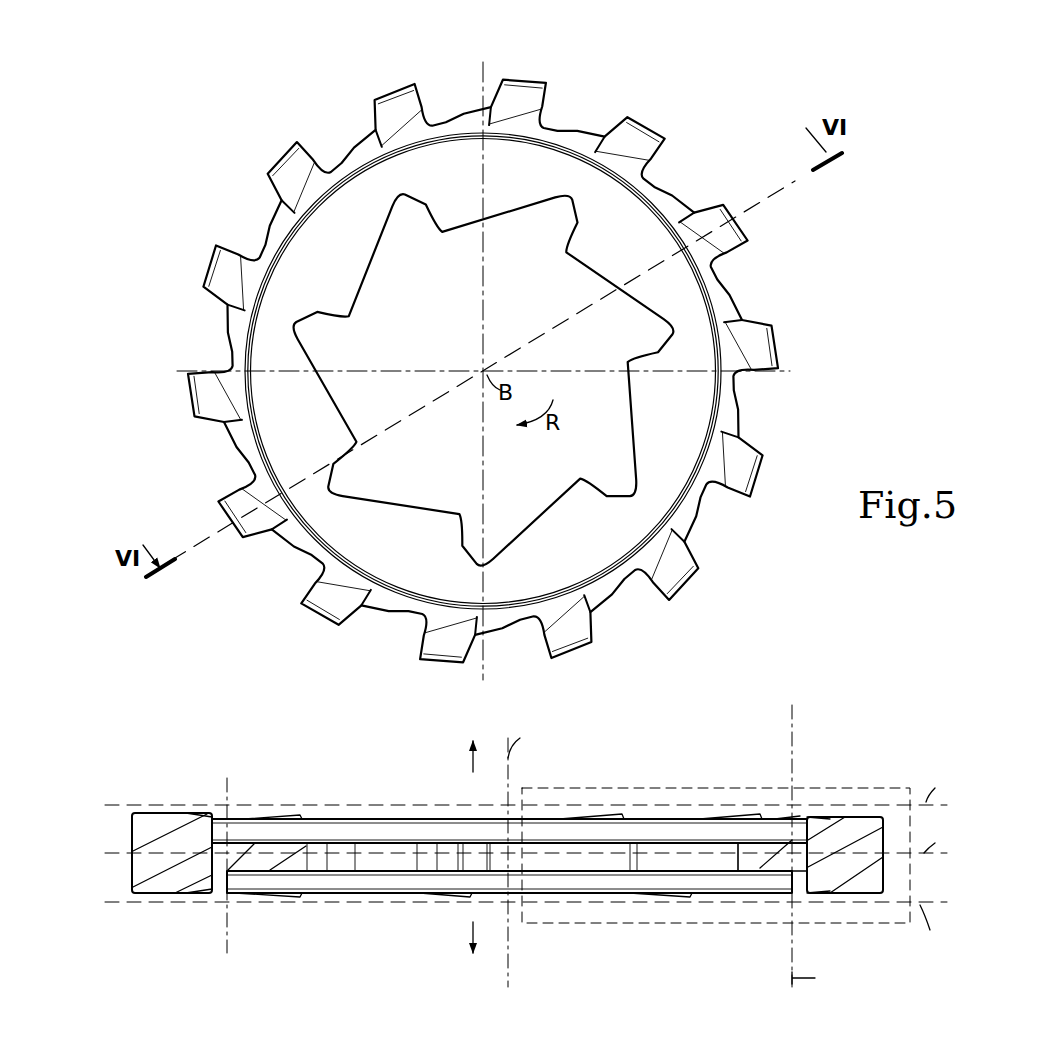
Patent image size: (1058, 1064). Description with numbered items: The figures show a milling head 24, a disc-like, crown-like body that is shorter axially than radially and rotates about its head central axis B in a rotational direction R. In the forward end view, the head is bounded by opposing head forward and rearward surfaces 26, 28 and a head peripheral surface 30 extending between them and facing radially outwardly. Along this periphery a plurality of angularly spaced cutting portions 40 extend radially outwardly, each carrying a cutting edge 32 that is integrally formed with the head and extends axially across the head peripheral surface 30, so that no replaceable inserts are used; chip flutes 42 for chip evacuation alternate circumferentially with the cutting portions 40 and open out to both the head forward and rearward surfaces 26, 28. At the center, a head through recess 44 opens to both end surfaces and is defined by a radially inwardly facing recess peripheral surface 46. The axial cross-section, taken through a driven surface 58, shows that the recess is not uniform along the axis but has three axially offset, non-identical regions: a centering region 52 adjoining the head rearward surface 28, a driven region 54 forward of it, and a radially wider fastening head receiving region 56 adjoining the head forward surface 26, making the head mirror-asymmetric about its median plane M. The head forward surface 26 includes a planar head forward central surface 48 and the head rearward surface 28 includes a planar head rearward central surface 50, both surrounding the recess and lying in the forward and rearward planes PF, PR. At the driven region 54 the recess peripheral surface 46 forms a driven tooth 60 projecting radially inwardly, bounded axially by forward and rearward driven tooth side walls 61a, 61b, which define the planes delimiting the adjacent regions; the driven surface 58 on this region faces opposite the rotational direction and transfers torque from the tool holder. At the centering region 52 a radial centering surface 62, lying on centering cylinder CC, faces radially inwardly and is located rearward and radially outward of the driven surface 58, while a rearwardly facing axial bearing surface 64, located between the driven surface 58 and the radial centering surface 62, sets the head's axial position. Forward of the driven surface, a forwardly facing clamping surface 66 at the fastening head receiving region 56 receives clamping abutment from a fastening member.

In FIG. 5, the milling head 24 is at (170, 160).
In FIG. 6, the milling head 24 is at (118, 752).
In FIG. 5, the head forward surface 26 is at (590, 152).
In FIG. 6, the head forward surface 26 is at (198, 812).
In FIG. 6, the head rearward surface 28 is at (195, 895).
In FIG. 5, the head peripheral surface 30 is at (802, 338).
In FIG. 6, the head peripheral surface 30 is at (132, 837).
In FIG. 5, the cutting edge 32 is at (670, 141).
In FIG. 6, the cutting edge 32 is at (132, 866).
In FIG. 5, the cutting portion 40 is at (265, 138).
In FIG. 5, the chip flute 42 is at (325, 145).
In FIG. 5, the head through recess 44 is at (330, 342).
In FIG. 6, the head through recess 44 is at (592, 796).
In FIG. 5, the recess peripheral surface 46 is at (355, 200).
In FIG. 6, the head forward central surface 48 is at (796, 817).
In FIG. 6, the head rearward central surface 50 is at (833, 894).
In FIG. 6, the centering region 52 is at (624, 882).
In FIG. 6, the driven region 54 is at (535, 853).
In FIG. 6, the fastening head receiving region 56 is at (707, 830).
In FIG. 5, the driven surface 58 is at (562, 216).
In FIG. 6, the driven surface 58 is at (760, 843).
In FIG. 5, the driven tooth 60 is at (612, 258).
In FIG. 5, the forward driven tooth side wall 61a is at (672, 403).
In FIG. 6, the forward driven tooth side wall 61a is at (290, 846).
In FIG. 6, the rearward driven tooth side wall 61b is at (296, 873).
In FIG. 6, the radial centering surface 62 is at (228, 895).
In FIG. 6, the axial bearing surface 64 is at (773, 875).
In FIG. 5, the clamping surface 66 is at (530, 165).
In FIG. 6, the clamping surface 66 is at (238, 840).